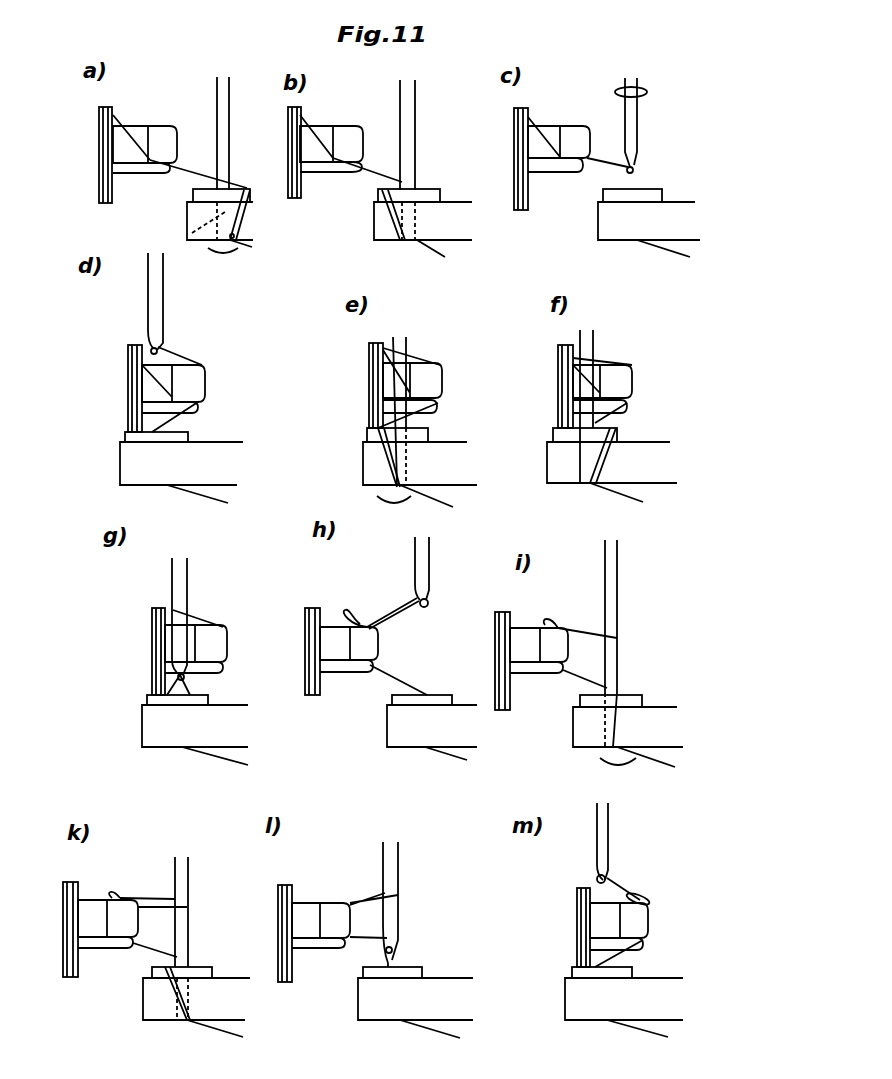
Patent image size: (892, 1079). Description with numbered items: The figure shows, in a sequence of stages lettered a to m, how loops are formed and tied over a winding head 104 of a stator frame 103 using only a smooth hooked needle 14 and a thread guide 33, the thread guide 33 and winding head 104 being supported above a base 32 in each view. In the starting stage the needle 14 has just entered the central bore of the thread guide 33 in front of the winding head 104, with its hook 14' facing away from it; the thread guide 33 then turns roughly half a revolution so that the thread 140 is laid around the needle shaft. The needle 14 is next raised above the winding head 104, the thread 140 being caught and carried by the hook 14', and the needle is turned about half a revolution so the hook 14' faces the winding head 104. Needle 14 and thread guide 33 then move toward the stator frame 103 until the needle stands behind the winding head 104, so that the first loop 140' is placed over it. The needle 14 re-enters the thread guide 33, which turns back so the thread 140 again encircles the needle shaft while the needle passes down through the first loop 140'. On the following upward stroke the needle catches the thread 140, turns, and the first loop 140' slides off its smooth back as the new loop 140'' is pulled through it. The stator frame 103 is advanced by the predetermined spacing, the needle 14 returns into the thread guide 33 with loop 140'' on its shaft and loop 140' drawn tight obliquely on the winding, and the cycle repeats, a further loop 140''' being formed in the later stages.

The hooked needle 14 is at (395, 547).
The hook 14' is at (382, 569).
The base / support block 32 is at (190, 213).
The thread guide 33 is at (193, 193).
The stator frame 103 is at (132, 394).
The winding head 104 is at (163, 133).
The thread 140 is at (391, 572).
The first loop 140' is at (379, 613).
The new loop 140'' is at (414, 763).
The thread section 140''' is at (642, 874).